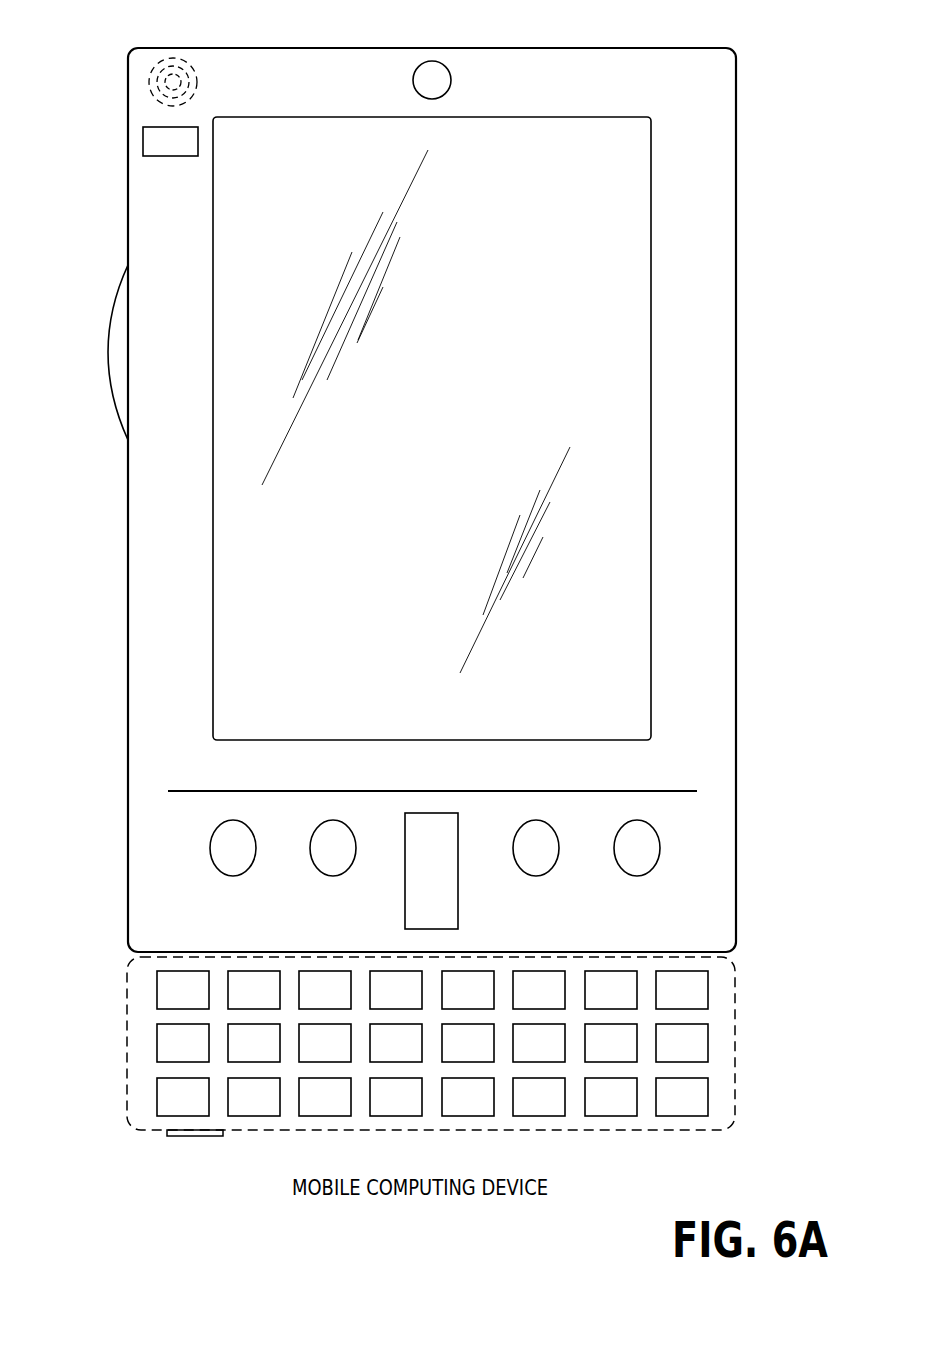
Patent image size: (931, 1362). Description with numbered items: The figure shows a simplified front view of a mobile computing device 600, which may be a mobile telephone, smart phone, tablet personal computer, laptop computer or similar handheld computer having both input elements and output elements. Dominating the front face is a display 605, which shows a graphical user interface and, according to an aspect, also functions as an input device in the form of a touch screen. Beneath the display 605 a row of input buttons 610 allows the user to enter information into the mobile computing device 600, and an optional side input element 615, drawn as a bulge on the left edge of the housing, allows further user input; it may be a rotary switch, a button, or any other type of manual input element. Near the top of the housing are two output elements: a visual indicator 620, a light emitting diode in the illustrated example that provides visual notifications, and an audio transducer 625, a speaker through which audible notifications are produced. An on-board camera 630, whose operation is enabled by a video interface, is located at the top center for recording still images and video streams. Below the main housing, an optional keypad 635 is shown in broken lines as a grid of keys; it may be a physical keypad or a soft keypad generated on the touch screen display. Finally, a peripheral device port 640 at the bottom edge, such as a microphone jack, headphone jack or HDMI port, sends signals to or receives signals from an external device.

The mobile computing device 600 is at (702, 48).
The display 605 is at (255, 588).
The input buttons 610 is at (233, 876).
The side input element 615 is at (108, 355).
The visual indicator 620 is at (143, 138).
The audio transducer 625 is at (148, 84).
The on-board camera 630 is at (432, 61).
The keypad 635 is at (127, 1040).
The peripheral device port 640 is at (172, 1137).